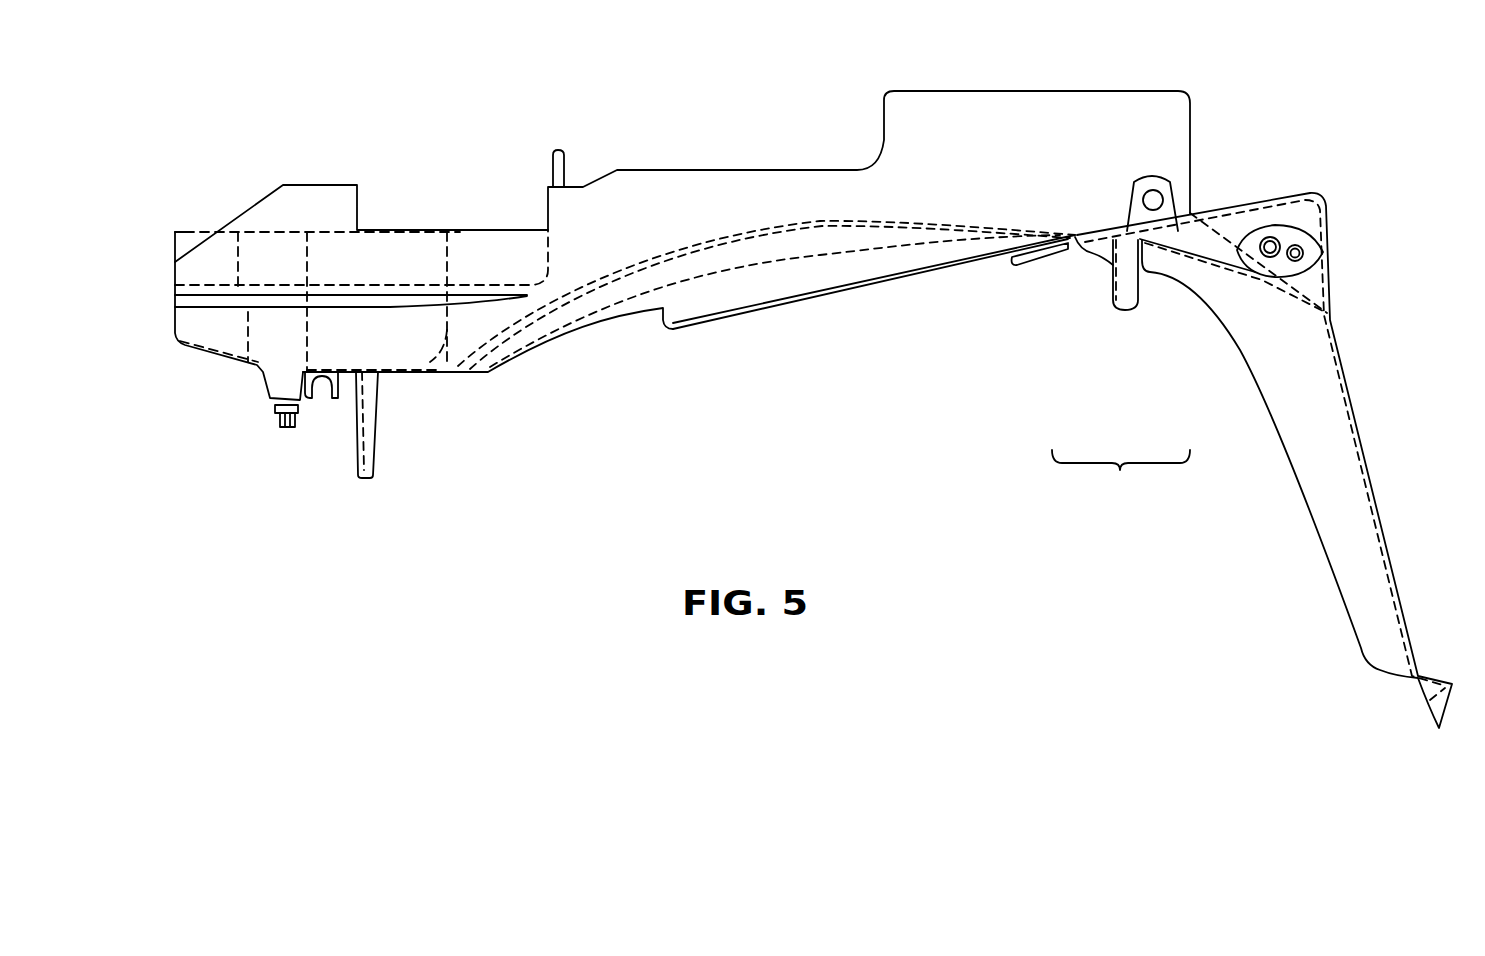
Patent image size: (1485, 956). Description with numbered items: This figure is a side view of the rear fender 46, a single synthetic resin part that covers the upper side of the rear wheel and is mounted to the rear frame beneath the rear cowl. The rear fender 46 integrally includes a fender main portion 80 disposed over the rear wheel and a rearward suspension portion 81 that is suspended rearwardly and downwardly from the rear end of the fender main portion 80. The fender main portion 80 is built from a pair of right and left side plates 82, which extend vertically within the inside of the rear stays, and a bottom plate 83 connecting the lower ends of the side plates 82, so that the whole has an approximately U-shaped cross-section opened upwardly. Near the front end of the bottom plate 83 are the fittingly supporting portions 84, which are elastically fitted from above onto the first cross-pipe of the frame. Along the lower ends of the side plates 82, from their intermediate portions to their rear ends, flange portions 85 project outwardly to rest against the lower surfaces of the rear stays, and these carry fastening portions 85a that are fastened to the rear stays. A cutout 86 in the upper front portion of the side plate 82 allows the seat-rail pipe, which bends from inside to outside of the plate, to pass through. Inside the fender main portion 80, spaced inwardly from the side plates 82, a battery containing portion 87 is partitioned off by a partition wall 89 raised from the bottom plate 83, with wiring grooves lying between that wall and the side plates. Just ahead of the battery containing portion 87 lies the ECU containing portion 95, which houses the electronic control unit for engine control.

The side plate 82 is at (828, 183).
The cutout 86 is at (548, 212).
The partition wall 89 is at (445, 277).
The bottom plate 83 is at (472, 373).
The flange portion 85 is at (925, 270).
The fastening portion 85a is at (1030, 260).
The fender main portion 80 is at (907, 294).
The rearward suspension portion 81 is at (1277, 340).
The rear fender 46 is at (1121, 484).
The battery containing portion 87 is at (423, 347).
The fittingly supporting portion 84 is at (337, 400).
The ECU containing portion 95 is at (263, 415).